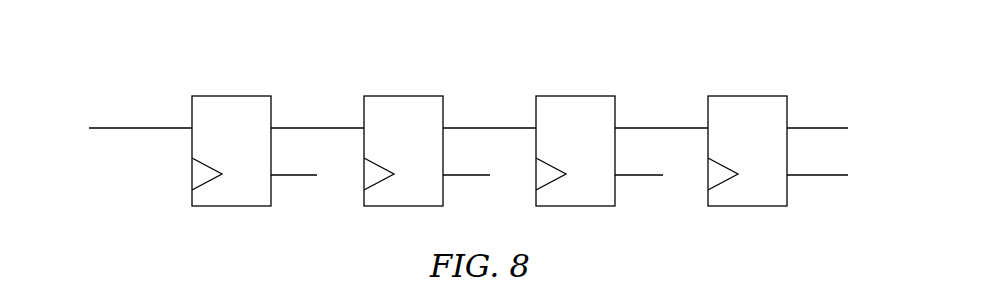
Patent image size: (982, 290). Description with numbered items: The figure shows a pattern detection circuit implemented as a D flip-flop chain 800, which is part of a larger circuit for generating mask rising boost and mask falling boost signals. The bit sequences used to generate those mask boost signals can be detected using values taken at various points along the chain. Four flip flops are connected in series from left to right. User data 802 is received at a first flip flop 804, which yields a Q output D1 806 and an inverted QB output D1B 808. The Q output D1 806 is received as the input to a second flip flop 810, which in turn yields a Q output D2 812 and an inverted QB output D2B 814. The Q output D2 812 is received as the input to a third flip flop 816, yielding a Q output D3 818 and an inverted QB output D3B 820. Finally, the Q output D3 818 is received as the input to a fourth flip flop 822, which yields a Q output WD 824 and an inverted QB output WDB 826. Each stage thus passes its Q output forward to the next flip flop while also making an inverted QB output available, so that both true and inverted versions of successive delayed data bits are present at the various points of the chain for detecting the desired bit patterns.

The D flip-flop chain 800 is at (142, 53).
The user data 802 is at (133, 130).
The first flip flop 804 is at (230, 95).
The Q output D1 806 is at (342, 125).
The inverted QB output D1B 808 is at (283, 177).
The second flip flop 810 is at (402, 95).
The Q output D2 812 is at (512, 125).
The inverted QB output D2B 814 is at (453, 178).
The third flip flop 816 is at (575, 95).
The Q output D3 818 is at (685, 125).
The inverted QB output D3B 820 is at (627, 178).
The fourth flip flop 822 is at (748, 95).
The Q output WD 824 is at (838, 125).
The inverted QB output WDB 826 is at (800, 178).